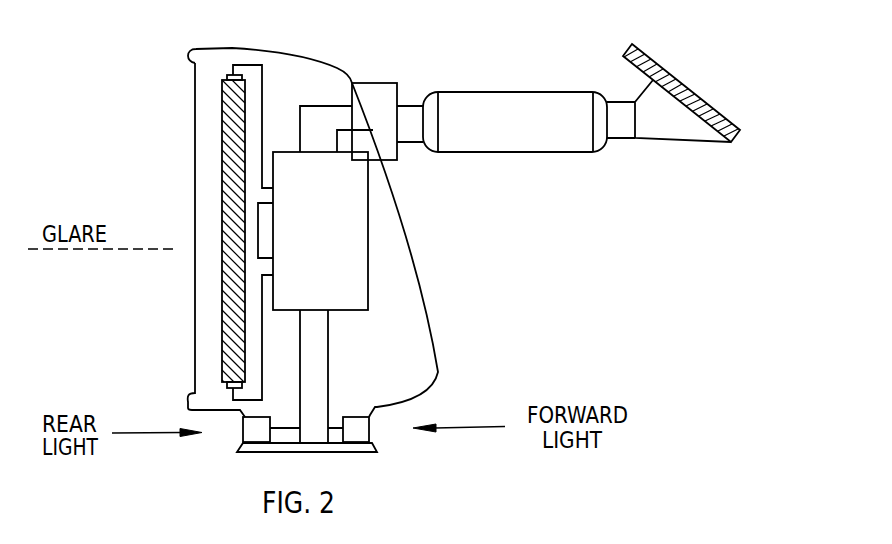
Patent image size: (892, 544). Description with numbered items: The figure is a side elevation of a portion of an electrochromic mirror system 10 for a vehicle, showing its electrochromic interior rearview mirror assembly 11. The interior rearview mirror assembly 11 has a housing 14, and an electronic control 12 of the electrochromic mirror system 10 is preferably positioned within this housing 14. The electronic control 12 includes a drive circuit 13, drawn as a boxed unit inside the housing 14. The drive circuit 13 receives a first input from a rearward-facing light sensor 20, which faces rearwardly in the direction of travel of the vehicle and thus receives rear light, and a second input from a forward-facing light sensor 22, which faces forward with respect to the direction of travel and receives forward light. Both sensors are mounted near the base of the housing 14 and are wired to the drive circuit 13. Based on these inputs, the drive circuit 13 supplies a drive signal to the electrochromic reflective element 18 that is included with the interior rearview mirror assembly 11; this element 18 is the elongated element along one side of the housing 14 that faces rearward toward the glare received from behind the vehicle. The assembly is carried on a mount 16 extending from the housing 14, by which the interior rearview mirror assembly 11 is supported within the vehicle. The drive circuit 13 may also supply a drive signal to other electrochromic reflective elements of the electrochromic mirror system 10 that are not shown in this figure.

The electrochromic mirror system 10 is at (479, 19).
The electrochromic interior rearview mirror assembly 11 is at (193, 44).
The electronic control 12 is at (450, 331).
The drive circuit 13 is at (368, 202).
The housing 14 is at (295, 53).
The mirror / windshield mount 16 is at (648, 55).
The electrochromic reflective element 18 is at (221, 145).
The rearward-facing light sensor 20 is at (243, 430).
The forward-facing light sensor 22 is at (372, 430).